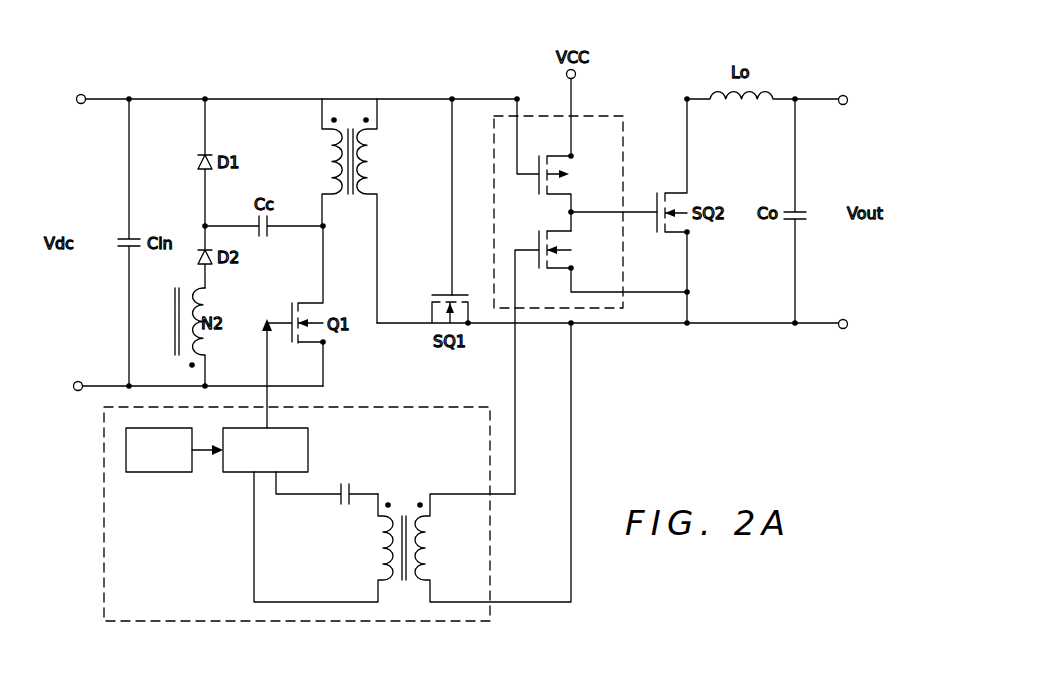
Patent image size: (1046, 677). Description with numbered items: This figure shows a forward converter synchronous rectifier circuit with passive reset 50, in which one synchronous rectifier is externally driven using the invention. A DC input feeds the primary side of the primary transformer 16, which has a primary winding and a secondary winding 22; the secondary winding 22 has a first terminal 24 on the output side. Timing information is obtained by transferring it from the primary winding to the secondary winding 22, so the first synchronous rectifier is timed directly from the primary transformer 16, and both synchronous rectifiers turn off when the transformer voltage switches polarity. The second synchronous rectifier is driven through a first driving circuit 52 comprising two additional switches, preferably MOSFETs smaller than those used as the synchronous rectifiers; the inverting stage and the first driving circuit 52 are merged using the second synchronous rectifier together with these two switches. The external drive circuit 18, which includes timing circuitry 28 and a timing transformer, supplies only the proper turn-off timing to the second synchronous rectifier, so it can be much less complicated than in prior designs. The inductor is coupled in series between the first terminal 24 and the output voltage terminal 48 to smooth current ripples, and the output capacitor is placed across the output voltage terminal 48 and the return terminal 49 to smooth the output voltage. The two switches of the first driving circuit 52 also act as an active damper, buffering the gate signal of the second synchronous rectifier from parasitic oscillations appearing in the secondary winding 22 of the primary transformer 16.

The primary transformer 16 is at (363, 174).
The secondary winding 22 is at (369, 141).
The first terminal 24 is at (363, 112).
The first driving circuit 52 is at (622, 143).
The output voltage terminal 48 is at (847, 99).
The negative output terminal 49 is at (847, 326).
The forward converter synchronous rectifier circuit with passive reset 50 is at (724, 424).
The external drive circuit 18 is at (339, 470).
The timing circuitry 28 is at (240, 474).